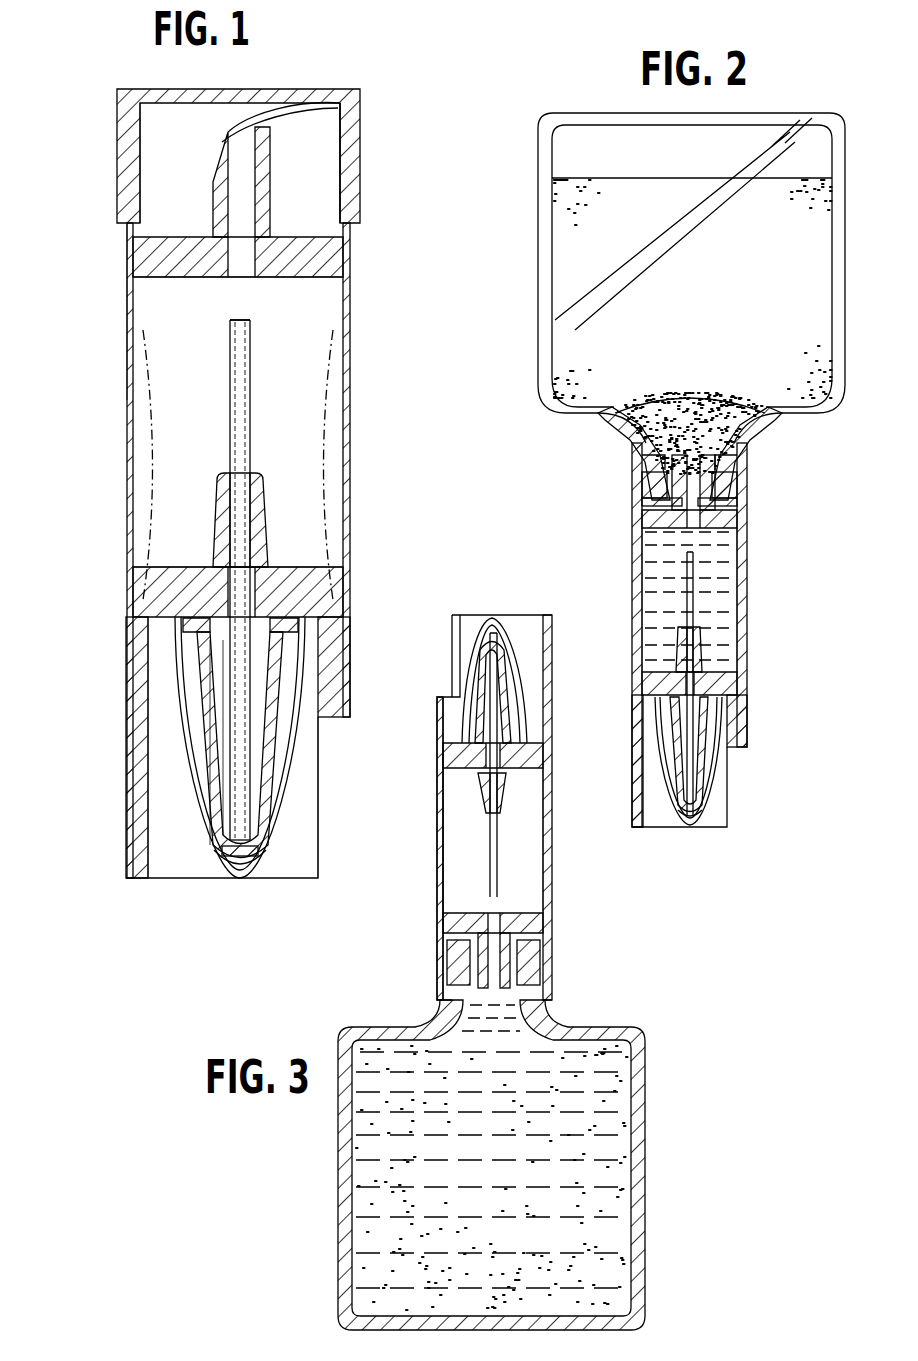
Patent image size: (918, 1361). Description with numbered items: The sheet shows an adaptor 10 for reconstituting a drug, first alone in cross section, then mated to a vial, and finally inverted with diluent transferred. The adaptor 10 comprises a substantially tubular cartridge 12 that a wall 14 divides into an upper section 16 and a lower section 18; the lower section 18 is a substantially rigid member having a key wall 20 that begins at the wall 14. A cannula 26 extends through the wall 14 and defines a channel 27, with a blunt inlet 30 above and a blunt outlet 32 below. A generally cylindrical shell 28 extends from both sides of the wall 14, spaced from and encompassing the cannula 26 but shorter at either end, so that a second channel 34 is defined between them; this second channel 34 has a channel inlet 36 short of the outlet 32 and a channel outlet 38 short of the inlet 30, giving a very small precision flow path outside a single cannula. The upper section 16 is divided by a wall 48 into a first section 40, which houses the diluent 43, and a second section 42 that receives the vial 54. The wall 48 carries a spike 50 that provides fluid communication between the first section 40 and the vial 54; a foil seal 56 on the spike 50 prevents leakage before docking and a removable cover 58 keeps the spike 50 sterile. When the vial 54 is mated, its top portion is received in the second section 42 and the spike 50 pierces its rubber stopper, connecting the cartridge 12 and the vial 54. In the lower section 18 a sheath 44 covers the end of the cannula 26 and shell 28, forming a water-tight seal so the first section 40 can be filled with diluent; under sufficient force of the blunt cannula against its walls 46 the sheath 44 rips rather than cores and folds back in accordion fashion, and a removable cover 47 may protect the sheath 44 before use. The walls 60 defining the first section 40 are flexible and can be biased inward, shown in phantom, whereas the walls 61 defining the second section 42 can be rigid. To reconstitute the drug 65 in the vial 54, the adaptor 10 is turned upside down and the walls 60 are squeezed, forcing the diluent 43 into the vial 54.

In FIG. 1, the adaptor 10 is at (352, 543).
In FIG. 2, the adaptor 10 is at (752, 694).
In FIG. 1, the cartridge 12 is at (352, 383).
In FIG. 2, the cartridge 12 is at (752, 670).
In FIG. 1, the wall 14 is at (320, 600).
In FIG. 3, the wall 14 is at (493, 755).
In FIG. 1, the upper section 16 is at (126, 290).
In FIG. 1, the lower section 18 is at (325, 672).
In FIG. 1, the key wall 20 is at (320, 742).
In FIG. 2, the key wall 20 is at (728, 806).
In FIG. 1, the cannula 26 is at (252, 372).
In FIG. 2, the cannula 26 is at (694, 595).
In FIG. 3, the cannula 26 is at (500, 845).
In FIG. 1, the channel 27 is at (252, 333).
In FIG. 1, the shell 28 is at (262, 652).
In FIG. 2, the shell 28 is at (702, 650).
In FIG. 3, the shell 28 is at (493, 693).
In FIG. 1, the inlet 30 is at (250, 300).
In FIG. 1, the outlet 32 is at (262, 862).
In FIG. 1, the second channel 34 is at (232, 708).
In FIG. 1, the channel inlet 36 is at (232, 775).
In FIG. 1, the channel outlet 38 is at (268, 525).
In FIG. 3, the channel outlet 38 is at (492, 793).
In FIG. 1, the first section 40 is at (150, 322).
In FIG. 2, the first section 40 is at (735, 555).
In FIG. 3, the first section 40 is at (528, 897).
In FIG. 1, the second section 42 is at (318, 165).
In FIG. 2, the second section 42 is at (735, 492).
In FIG. 3, the second section 42 is at (545, 984).
In FIG. 2, the diluent 43 is at (728, 612).
In FIG. 1, the sheath 44 is at (212, 862).
In FIG. 2, the sheath 44 is at (705, 818).
In FIG. 1, the walls 46 is at (242, 870).
In FIG. 1, the removable cover 47 is at (292, 798).
In FIG. 2, the removable cover 47 is at (722, 776).
In FIG. 3, the removable cover 47 is at (494, 680).
In FIG. 1, the wall 48 is at (133, 246).
In FIG. 2, the wall 48 is at (740, 522).
In FIG. 3, the wall 48 is at (493, 923).
In FIG. 1, the spike 50 is at (302, 138).
In FIG. 2, the spike 50 is at (672, 490).
In FIG. 3, the spike 50 is at (520, 947).
In FIG. 2, the vial 54 is at (800, 303).
In FIG. 3, the vial 54 is at (638, 1027).
In FIG. 1, the foil seal 56 is at (244, 130).
In FIG. 2, the foil seal 56 is at (738, 460).
In FIG. 1, the removable cover 58 is at (342, 101).
In FIG. 2, the removable cover 58 is at (645, 503).
In FIG. 1, the walls 60 is at (128, 498).
In FIG. 3, the walls 60 is at (553, 862).
In FIG. 1, the walls 61 is at (345, 200).
In FIG. 2, the drug 65 is at (800, 240).
In FIG. 3, the drug 65 is at (610, 1105).